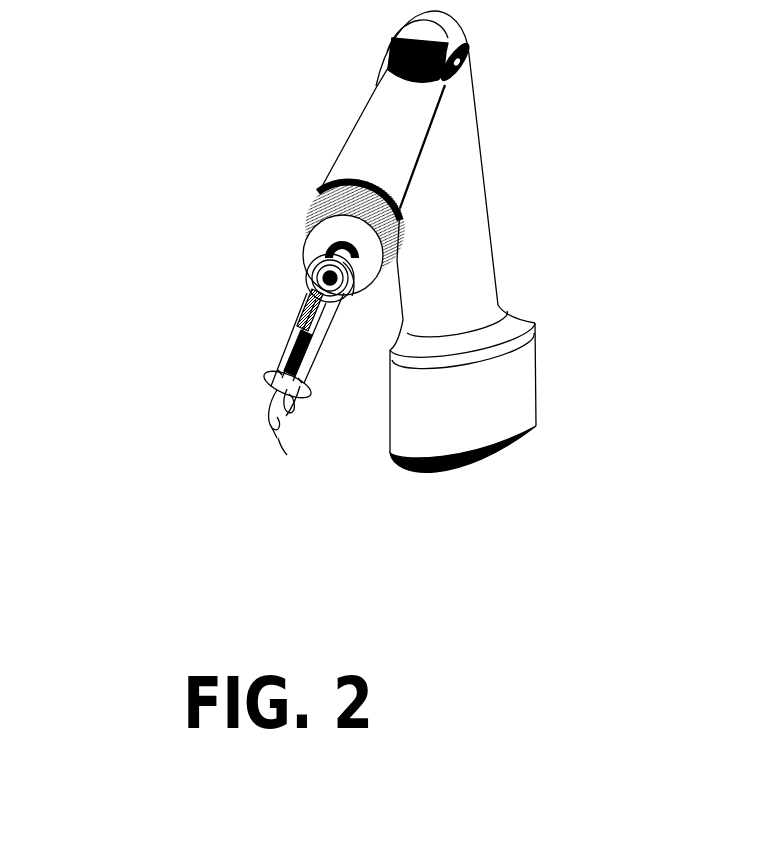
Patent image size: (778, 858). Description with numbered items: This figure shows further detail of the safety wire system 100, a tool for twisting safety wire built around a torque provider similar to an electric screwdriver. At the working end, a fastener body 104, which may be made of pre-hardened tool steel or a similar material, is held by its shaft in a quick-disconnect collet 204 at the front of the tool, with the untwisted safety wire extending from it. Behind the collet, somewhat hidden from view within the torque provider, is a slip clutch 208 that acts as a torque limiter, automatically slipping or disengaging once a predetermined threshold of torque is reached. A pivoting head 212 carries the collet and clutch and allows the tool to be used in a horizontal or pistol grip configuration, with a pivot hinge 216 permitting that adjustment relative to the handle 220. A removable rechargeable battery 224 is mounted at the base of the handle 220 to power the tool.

The safety wire system 100 is at (566, 593).
The fastener body 104 is at (300, 321).
The quick-disconnect collet 204 is at (312, 275).
The slip clutch 208 is at (320, 214).
The pivoting head 212 is at (352, 128).
The pivot hinge 216 is at (474, 43).
The handle 220 is at (497, 227).
The removable rechargeable battery 224 is at (541, 450).